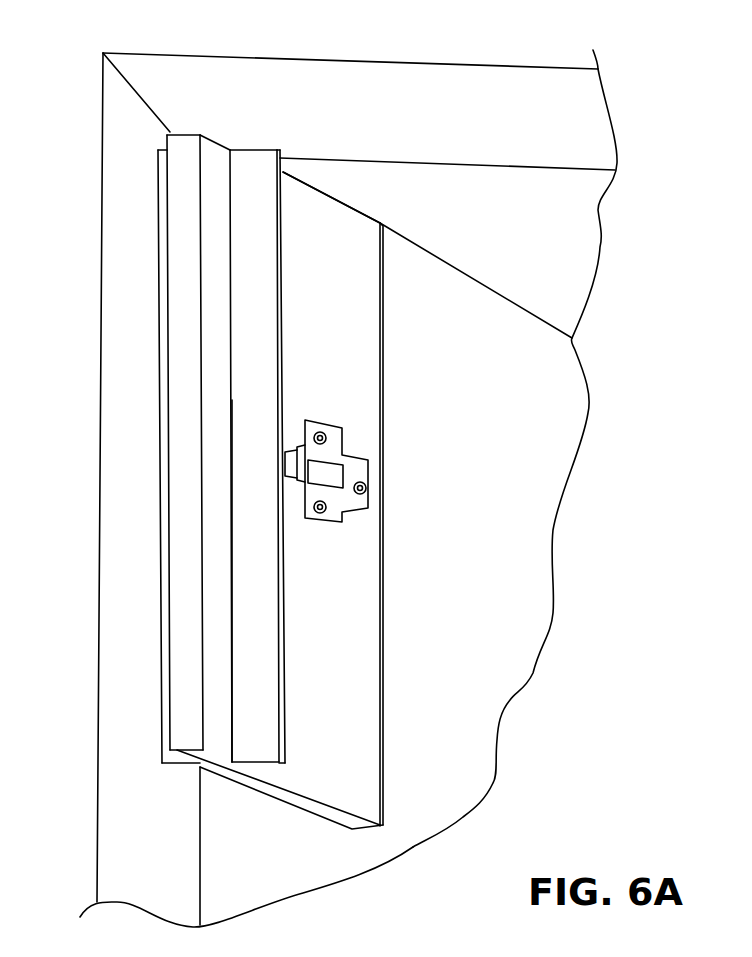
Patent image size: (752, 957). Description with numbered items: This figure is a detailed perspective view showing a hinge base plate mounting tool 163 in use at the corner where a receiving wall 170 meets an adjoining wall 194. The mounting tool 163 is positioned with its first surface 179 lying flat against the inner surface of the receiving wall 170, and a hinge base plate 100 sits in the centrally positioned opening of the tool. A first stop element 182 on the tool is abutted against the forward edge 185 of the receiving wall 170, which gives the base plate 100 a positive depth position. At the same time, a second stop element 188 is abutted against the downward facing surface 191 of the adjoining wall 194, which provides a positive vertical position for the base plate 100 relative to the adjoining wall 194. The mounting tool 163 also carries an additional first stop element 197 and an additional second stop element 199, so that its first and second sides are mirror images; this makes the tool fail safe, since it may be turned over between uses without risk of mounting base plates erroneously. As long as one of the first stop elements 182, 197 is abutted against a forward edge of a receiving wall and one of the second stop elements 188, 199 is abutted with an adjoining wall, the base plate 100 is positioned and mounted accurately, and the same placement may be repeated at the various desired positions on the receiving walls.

The hinge base plate 100 is at (345, 458).
The mounting tool 163 is at (333, 499).
The receiving wall 170 is at (515, 448).
The first surface 179 is at (262, 795).
The first stop element 182 is at (180, 768).
The forward edge 185 is at (115, 553).
The second stop element 188 is at (345, 198).
The downward facing surface 191 is at (447, 248).
The adjoining wall 194 is at (485, 105).
The additional first stop element 197 is at (260, 673).
The additional second stop element 199 is at (333, 775).